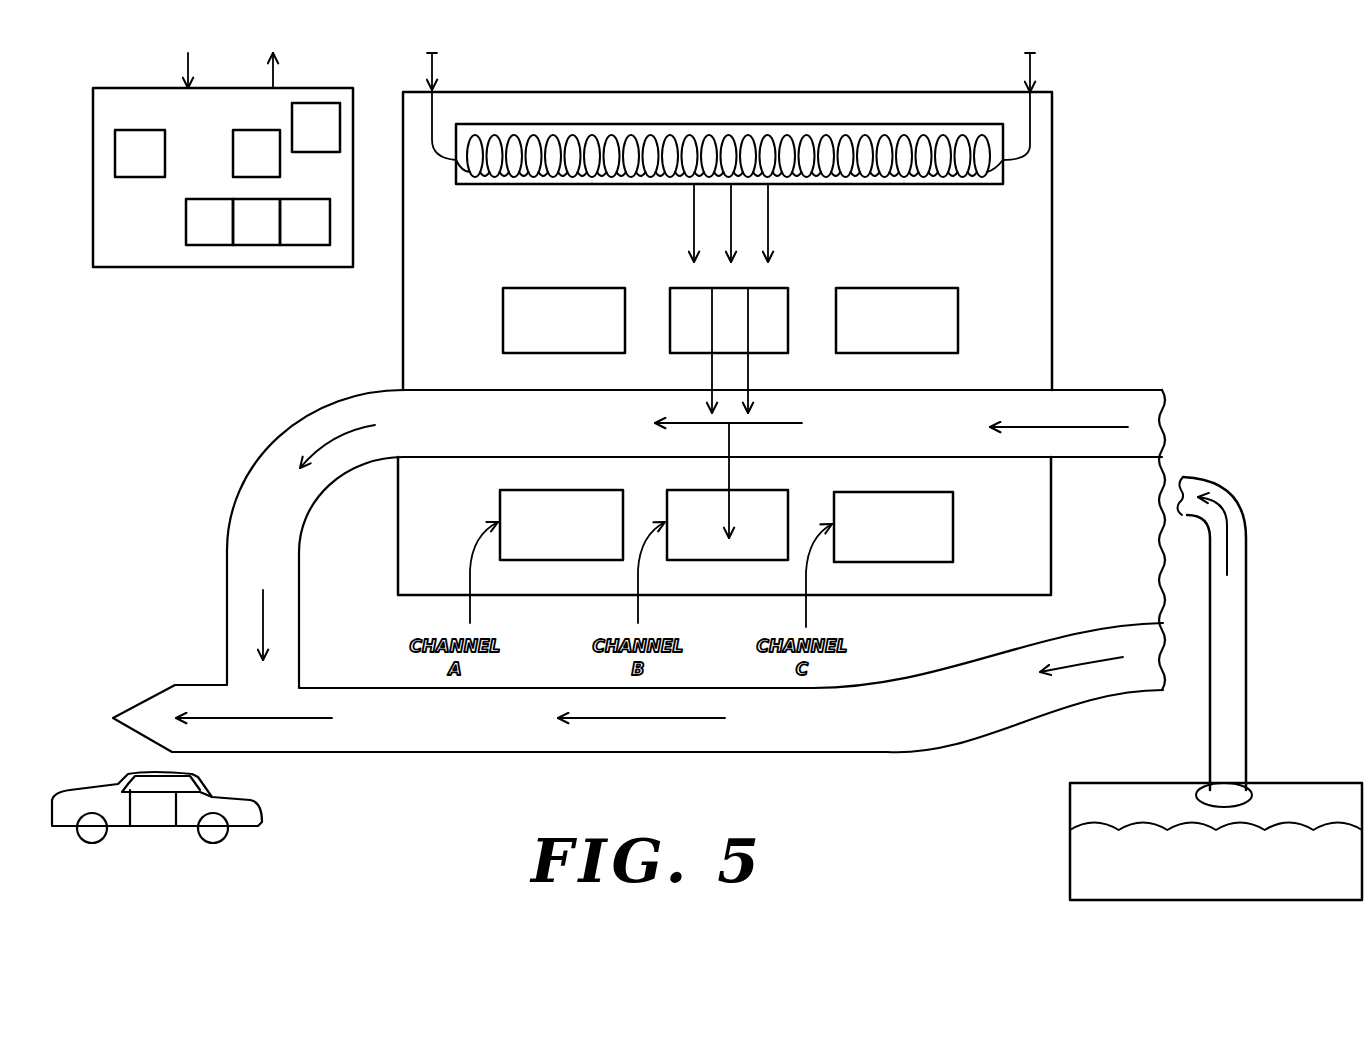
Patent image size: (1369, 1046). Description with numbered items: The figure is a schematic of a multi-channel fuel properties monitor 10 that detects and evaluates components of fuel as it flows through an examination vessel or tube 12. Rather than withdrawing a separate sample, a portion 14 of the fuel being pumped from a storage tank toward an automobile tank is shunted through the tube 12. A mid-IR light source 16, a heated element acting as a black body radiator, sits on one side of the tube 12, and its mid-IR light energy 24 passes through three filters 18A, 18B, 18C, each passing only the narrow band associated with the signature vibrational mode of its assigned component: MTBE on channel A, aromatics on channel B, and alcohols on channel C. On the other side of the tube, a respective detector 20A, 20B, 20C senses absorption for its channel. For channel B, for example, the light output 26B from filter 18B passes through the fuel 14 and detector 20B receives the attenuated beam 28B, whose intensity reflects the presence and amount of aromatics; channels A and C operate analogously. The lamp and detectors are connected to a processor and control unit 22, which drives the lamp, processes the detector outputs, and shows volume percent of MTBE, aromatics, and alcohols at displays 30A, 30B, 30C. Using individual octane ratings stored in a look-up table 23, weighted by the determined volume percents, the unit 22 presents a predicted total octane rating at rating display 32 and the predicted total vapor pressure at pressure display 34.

The multi-channel fuel properties monitor 10 is at (690, 97).
The examination vessel or tube 12 is at (1090, 390).
The portion of pumped fuel 14 is at (678, 423).
The mid-IR light source 16 is at (768, 124).
The filter 18A is at (582, 332).
The filter 18B is at (690, 302).
The filter 18C is at (916, 332).
The detector 20A is at (581, 535).
The detector 20B is at (705, 556).
The detector 20C is at (912, 535).
The processor and control unit 22 is at (150, 117).
The look-up table 23 is at (127, 166).
The mid-IR light energy 24 is at (694, 212).
The mid-IR light output 26B is at (712, 367).
The attenuated beam 28B is at (732, 450).
The display 30A is at (210, 246).
The display 30B is at (263, 246).
The display 30C is at (316, 246).
The rating display 32 is at (243, 166).
The pressure display 34 is at (303, 140).